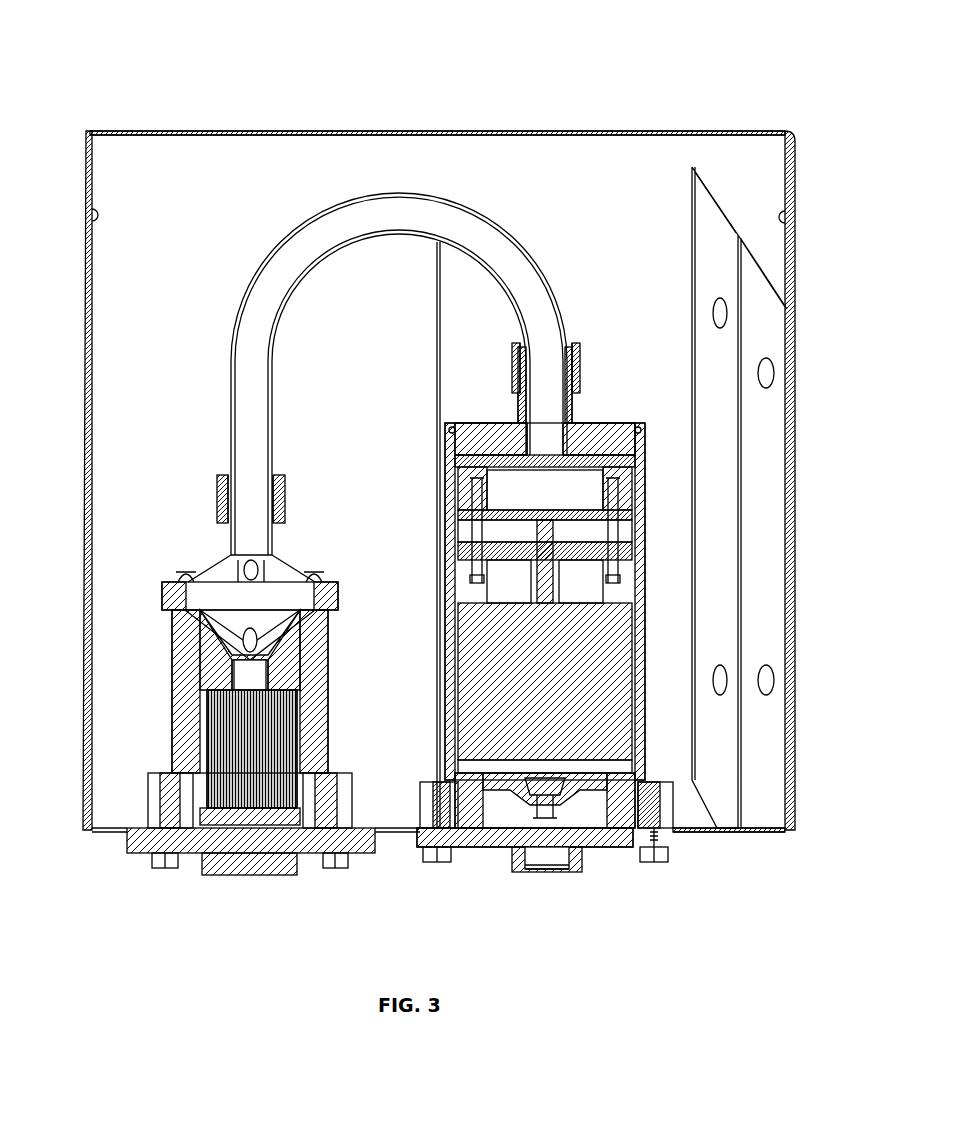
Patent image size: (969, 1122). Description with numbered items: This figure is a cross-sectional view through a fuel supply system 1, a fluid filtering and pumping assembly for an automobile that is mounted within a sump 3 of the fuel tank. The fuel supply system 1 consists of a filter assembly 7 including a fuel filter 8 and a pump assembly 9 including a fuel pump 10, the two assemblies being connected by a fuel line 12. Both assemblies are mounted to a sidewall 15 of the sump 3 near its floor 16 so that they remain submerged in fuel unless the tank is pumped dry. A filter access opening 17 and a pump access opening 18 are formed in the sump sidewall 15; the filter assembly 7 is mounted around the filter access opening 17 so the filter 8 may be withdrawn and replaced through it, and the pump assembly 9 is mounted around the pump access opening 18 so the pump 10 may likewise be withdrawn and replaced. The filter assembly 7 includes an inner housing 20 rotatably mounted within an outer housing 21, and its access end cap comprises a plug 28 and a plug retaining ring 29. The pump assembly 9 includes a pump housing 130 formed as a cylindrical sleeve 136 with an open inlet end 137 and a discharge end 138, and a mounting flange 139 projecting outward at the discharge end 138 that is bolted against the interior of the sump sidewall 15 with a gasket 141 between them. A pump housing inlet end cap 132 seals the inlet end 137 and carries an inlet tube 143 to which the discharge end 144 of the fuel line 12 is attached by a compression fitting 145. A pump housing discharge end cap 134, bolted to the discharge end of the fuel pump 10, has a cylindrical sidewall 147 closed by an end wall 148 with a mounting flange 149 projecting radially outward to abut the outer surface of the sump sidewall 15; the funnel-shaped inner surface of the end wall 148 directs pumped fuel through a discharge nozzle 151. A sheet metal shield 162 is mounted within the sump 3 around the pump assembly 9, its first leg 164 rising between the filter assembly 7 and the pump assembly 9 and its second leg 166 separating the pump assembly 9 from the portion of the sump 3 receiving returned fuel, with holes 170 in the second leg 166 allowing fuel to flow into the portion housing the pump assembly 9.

The fuel supply system 1 is at (96, 48).
The sump 3 is at (94, 128).
The filter assembly 7 is at (172, 534).
The fuel filter 8 is at (202, 713).
The pump assembly 9 is at (636, 364).
The fuel pump 10 is at (622, 638).
The fuel line 12 is at (238, 296).
The sump sidewall 15 is at (88, 516).
The floor 16 is at (587, 187).
The filter access opening 17 is at (190, 868).
The pump access opening 18 is at (600, 832).
The inner housing 20 is at (330, 650).
The outer housing 21 is at (326, 733).
The plug 28 is at (254, 876).
The plug retaining ring 29 is at (355, 853).
The pump housing 130 is at (648, 585).
The pump housing inlet end cap 132 is at (472, 425).
The pump housing discharge end cap 134 is at (440, 835).
The cylindrical sleeve 136 is at (648, 672).
The inlet end 137 is at (640, 432).
The discharge end 138 is at (638, 845).
The mounting flange 139 is at (668, 800).
The gasket 141 is at (436, 812).
The inlet tube 143 is at (578, 412).
The discharge end of fuel line 144 is at (498, 430).
The compression fitting 145 is at (573, 343).
The cylindrical sidewall 147 is at (487, 812).
The end wall 148 is at (584, 848).
The mounting flange 149 is at (656, 848).
The discharge nozzle 151 is at (516, 858).
The shield 162 is at (732, 206).
The first leg 164 is at (436, 304).
The second leg 166 is at (737, 490).
The holes 170 is at (722, 318).